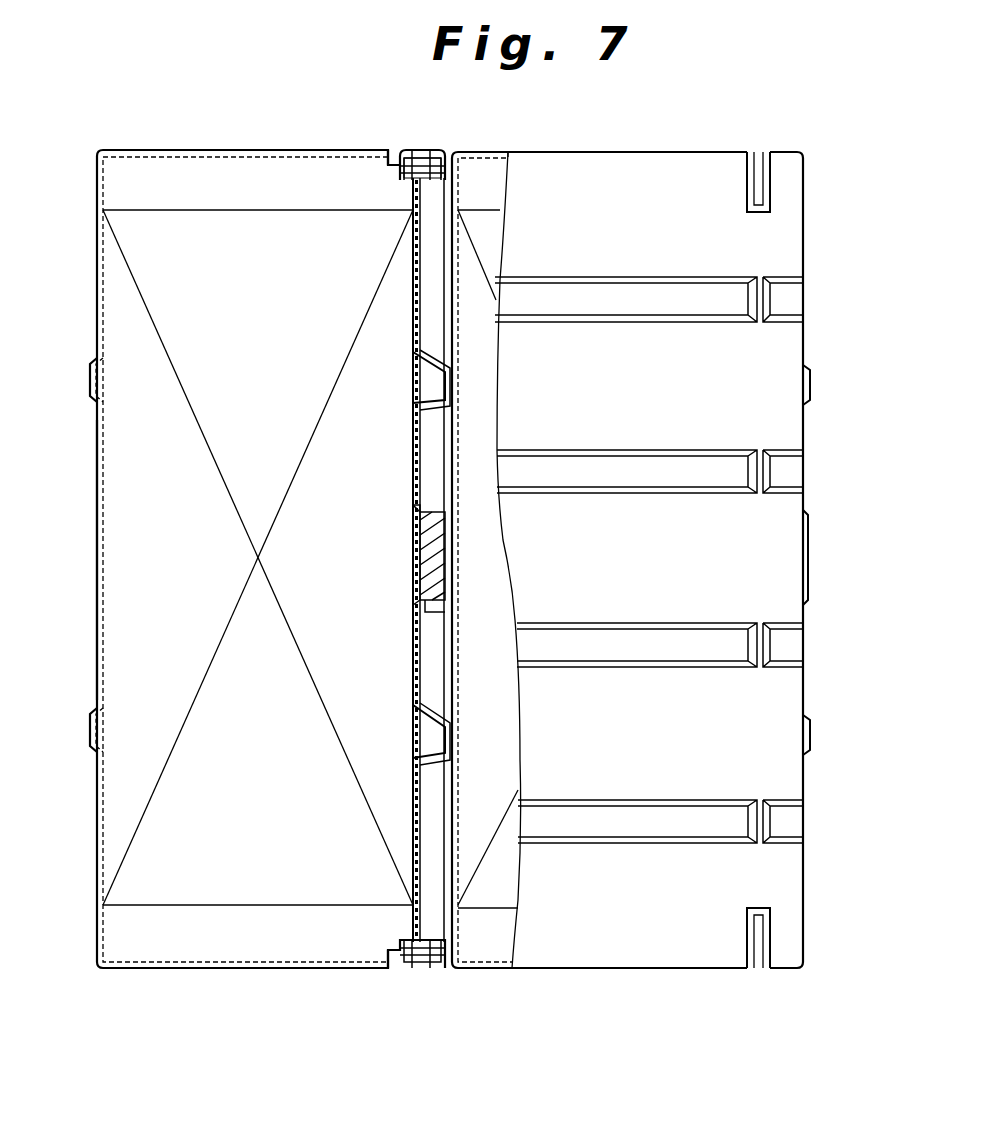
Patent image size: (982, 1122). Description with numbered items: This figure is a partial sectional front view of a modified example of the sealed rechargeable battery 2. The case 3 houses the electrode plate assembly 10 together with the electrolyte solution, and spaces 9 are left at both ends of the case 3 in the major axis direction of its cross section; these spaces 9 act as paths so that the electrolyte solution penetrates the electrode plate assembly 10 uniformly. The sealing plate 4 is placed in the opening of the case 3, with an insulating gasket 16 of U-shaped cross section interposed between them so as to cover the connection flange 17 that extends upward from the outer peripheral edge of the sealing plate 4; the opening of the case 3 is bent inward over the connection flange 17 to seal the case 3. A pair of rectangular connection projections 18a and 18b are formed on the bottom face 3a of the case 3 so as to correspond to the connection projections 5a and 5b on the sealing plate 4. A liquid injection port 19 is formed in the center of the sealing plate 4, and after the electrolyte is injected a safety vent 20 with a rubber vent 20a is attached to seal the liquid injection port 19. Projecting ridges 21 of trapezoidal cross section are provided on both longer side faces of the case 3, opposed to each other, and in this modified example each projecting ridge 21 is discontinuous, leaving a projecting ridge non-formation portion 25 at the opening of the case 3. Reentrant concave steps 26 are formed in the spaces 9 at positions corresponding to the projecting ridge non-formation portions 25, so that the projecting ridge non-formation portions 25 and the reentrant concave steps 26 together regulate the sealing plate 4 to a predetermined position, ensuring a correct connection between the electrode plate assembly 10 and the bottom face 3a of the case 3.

The sealed rechargeable battery 2 is at (275, 142).
The case 3 is at (195, 968).
The bottom face 3a is at (97, 575).
The sealing plate 4 is at (413, 290).
The connection projection 5a is at (815, 388).
The connection projection 5b is at (815, 733).
The space 9 is at (195, 178).
The electrode plate assembly 10 is at (275, 371).
The insulating gasket 16 is at (422, 150).
The connection flange 17 is at (440, 150).
The connection projection 18a is at (93, 395).
The connection projection 18b is at (93, 742).
The liquid injection port 19 is at (415, 540).
The safety vent 20 is at (457, 550).
The rubber vent 20a is at (425, 582).
The projecting ridge 21 is at (680, 302).
The projecting ridge non-formation portion 25 is at (757, 330).
The reentrant concave step 26 is at (394, 150).